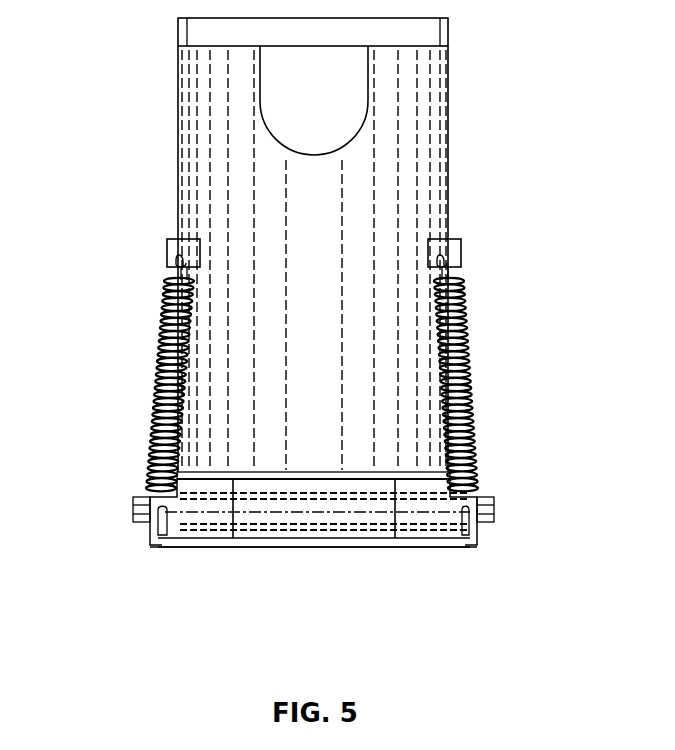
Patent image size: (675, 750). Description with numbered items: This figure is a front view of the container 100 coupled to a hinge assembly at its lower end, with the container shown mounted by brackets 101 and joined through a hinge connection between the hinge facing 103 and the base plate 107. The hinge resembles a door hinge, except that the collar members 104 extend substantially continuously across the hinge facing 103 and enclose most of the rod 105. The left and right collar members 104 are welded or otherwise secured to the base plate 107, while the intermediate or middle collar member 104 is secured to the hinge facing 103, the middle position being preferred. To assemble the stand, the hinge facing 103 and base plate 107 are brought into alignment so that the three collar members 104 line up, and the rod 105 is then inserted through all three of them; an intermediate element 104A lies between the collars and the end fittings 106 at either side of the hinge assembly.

The mailbox body 100 is at (175, 63).
The spring bracket 101 is at (167, 245).
The hinge facing 103 is at (342, 484).
The collar member 104 is at (208, 517).
The gasket 104A is at (290, 517).
The rod 105 is at (131, 510).
The flange 106 is at (178, 539).
The base plate 107 is at (333, 550).